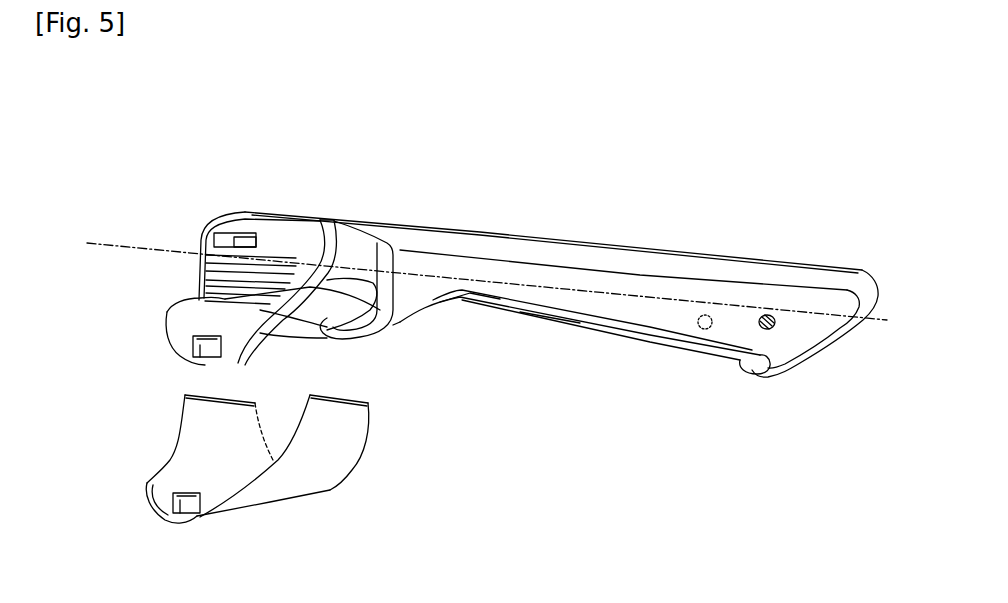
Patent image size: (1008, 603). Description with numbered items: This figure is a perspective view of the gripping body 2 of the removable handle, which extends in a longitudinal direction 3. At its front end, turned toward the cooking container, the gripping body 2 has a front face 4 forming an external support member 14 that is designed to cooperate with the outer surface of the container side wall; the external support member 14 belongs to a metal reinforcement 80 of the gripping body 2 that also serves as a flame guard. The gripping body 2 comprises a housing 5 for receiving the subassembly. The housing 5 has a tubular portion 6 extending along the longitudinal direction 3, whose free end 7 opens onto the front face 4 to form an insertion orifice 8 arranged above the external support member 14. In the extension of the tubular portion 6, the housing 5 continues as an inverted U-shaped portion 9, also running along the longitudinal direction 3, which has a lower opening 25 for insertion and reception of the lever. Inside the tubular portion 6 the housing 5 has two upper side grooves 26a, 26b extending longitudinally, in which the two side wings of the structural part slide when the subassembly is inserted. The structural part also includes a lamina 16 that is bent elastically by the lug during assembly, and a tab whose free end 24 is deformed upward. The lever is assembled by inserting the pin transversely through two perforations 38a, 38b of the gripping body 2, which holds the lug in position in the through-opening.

The gripping body 2 is at (166, 137).
The longitudinal direction 3 is at (874, 316).
The front face 4 is at (220, 293).
The housing 5 is at (467, 307).
The tubular portion 6 is at (240, 276).
The free end 7 is at (260, 277).
The insertion orifice 8 is at (257, 278).
The inverted U-shaped portion 9 is at (545, 312).
The external support member 14 is at (183, 505).
The lamina 16 is at (604, 337).
The free end 24 is at (658, 318).
The lower opening 25 is at (590, 323).
The upper side groove 26a is at (317, 237).
The upper side groove 26b is at (208, 241).
The perforation 38a is at (770, 316).
The perforation 38b is at (699, 326).
The metal reinforcement 80 is at (303, 472).